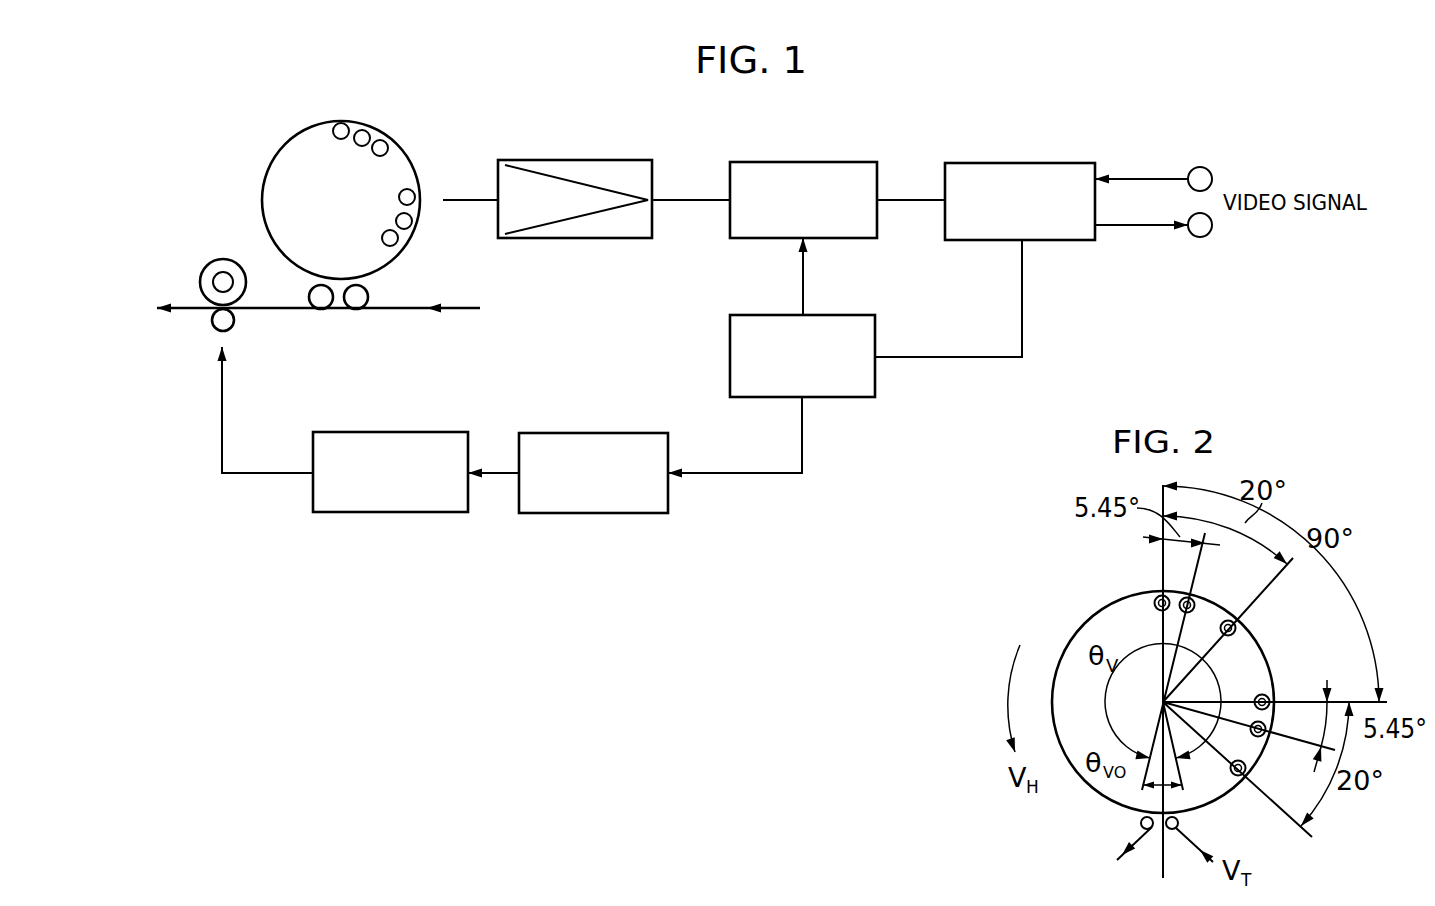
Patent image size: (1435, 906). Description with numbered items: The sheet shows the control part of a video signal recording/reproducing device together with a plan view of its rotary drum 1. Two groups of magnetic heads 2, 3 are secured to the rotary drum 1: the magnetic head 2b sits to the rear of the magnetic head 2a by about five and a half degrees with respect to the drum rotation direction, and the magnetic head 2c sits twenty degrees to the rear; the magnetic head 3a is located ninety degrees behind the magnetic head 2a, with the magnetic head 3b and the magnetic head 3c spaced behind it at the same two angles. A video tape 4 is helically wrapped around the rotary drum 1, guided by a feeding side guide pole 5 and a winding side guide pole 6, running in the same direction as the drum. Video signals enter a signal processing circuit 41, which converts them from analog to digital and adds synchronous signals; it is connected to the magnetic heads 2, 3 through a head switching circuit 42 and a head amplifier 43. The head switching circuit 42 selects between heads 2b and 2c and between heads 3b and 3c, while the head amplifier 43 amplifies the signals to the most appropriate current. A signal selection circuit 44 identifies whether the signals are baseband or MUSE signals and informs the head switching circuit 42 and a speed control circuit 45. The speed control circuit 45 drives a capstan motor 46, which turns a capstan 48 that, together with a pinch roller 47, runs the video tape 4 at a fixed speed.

In FIG. 1, the rotary drum 1 is at (267, 166).
In FIG. 2, the rotary drum 1 is at (1073, 630).
In FIG. 1, the magnetic heads 2 is at (374, 154).
In FIG. 1, the magnetic heads 3 is at (399, 198).
In FIG. 2, the magnetic head 2a is at (1152, 595).
In FIG. 2, the magnetic head 2b is at (1196, 605).
In FIG. 2, the magnetic head 2c is at (1238, 626).
In FIG. 2, the magnetic head 3a is at (1269, 692).
In FIG. 2, the magnetic head 3b is at (1267, 738).
In FIG. 2, the magnetic head 3c is at (1241, 777).
In FIG. 1, the video tape 4 is at (453, 310).
In FIG. 2, the video tape 4 is at (1189, 848).
In FIG. 2, the feeding side guide pole 5 is at (1180, 826).
In FIG. 2, the winding side guide pole 6 is at (1141, 826).
In FIG. 1, the signal processing circuit 41 is at (1017, 172).
In FIG. 1, the head switching circuit 42 is at (795, 166).
In FIG. 1, the head amplifier 43 is at (603, 166).
In FIG. 1, the signal selection circuit 44 is at (838, 320).
In FIG. 1, the speed control circuit 45 is at (622, 505).
In FIG. 1, the capstan motor 46 is at (390, 503).
In FIG. 1, the pinch roller 47 is at (227, 262).
In FIG. 1, the capstan 48 is at (234, 318).